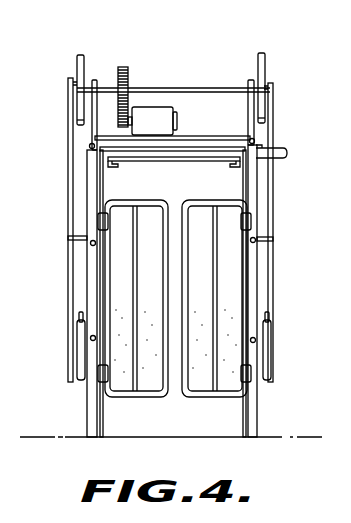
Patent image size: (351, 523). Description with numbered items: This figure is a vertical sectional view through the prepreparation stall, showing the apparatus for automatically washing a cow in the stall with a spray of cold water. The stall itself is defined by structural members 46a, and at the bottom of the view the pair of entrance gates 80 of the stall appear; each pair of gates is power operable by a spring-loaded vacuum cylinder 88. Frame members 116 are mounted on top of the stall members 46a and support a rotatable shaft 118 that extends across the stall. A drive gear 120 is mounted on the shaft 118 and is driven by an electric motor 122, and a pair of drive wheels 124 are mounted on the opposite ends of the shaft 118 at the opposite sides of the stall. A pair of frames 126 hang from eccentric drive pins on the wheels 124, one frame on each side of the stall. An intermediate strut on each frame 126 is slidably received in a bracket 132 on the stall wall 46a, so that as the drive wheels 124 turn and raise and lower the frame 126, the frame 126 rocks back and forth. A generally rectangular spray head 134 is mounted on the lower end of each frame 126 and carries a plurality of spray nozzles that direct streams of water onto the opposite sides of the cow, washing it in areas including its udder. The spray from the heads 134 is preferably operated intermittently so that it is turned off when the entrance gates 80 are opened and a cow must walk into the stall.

The stall structural member 46a is at (88, 193).
The entrance gate 80 is at (162, 397).
The spring-loaded vacuum cylinder 88 is at (287, 152).
The frame member 116 is at (95, 80).
The rotatable shaft 118 is at (168, 88).
The drive gear 120 is at (121, 67).
The electric motor 122 is at (176, 121).
The drive wheel 124 is at (77, 60).
The frame 126 is at (70, 280).
The bracket 132 is at (68, 238).
The spray head 134 is at (78, 348).